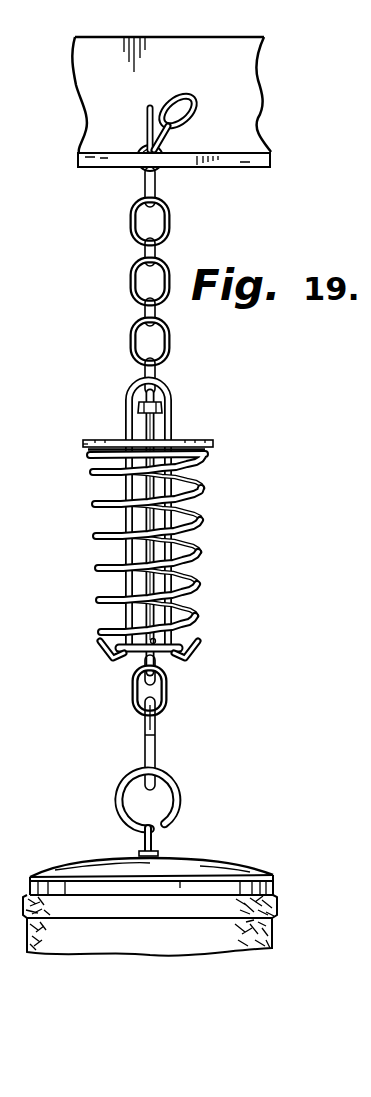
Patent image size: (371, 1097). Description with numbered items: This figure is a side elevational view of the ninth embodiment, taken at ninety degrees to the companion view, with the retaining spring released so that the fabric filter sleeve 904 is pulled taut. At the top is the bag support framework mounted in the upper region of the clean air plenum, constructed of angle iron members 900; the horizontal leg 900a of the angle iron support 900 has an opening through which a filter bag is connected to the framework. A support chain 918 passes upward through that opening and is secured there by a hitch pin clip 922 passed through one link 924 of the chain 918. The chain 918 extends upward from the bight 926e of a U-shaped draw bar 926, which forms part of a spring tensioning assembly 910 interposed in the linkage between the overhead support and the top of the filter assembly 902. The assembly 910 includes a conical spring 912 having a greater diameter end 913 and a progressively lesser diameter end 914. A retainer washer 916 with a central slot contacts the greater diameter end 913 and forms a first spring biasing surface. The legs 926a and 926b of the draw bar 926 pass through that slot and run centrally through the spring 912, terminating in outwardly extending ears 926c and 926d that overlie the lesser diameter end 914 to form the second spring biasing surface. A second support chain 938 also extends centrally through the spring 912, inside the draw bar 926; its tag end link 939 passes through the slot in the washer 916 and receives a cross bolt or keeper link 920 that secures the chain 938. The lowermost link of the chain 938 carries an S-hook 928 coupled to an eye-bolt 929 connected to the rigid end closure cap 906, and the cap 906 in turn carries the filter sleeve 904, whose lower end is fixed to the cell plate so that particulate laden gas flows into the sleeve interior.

The angle iron member 900 is at (291, 94).
The horizontal leg 900a is at (250, 167).
The hitch pin clip 922 is at (146, 109).
The link 924 is at (163, 170).
The support chain 918 is at (168, 228).
The bight 926e is at (168, 388).
The cross bolt or keeper link 920 is at (176, 424).
The tag end link 939 is at (140, 434).
The retainer washer 916 is at (213, 441).
The greater diameter end 913 is at (88, 452).
The spring tensioning assembly 910 is at (318, 499).
The draw bar 926 is at (144, 541).
The leg 926a is at (106, 523).
The leg 926b is at (200, 510).
The ear 926c is at (108, 656).
The ear 926d is at (195, 656).
The conical spring 912 is at (108, 556).
The lesser diameter end 914 is at (116, 640).
The support chain 938 is at (168, 690).
The S-hook 928 is at (156, 752).
The eye-bolt 929 is at (180, 800).
The filter assembly 902 is at (184, 887).
The end closure cap 906 is at (200, 870).
The filter sleeve 904 is at (262, 937).